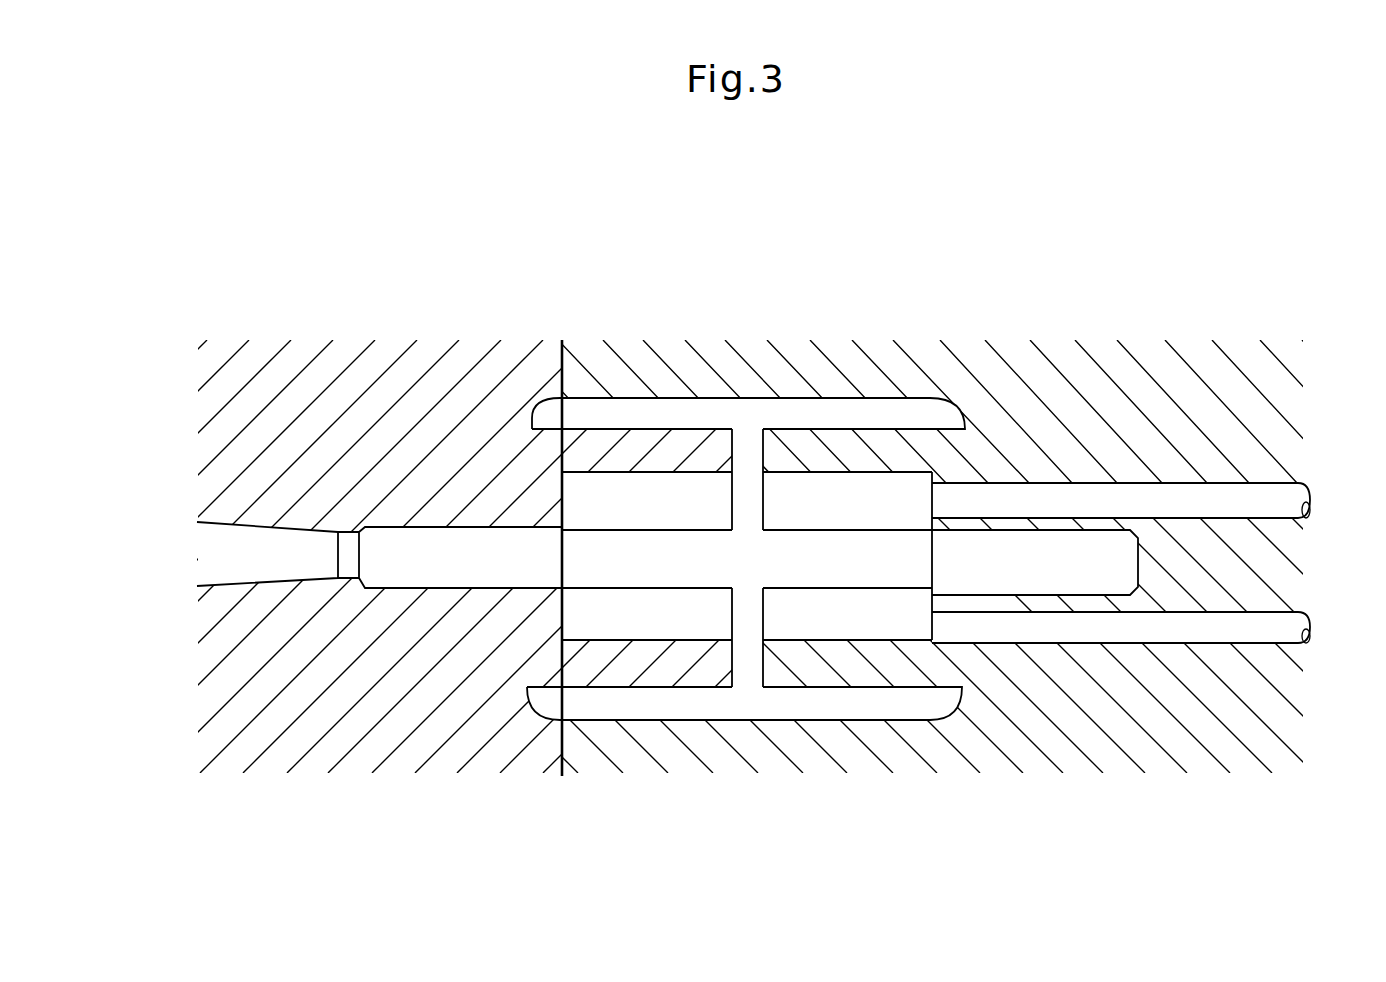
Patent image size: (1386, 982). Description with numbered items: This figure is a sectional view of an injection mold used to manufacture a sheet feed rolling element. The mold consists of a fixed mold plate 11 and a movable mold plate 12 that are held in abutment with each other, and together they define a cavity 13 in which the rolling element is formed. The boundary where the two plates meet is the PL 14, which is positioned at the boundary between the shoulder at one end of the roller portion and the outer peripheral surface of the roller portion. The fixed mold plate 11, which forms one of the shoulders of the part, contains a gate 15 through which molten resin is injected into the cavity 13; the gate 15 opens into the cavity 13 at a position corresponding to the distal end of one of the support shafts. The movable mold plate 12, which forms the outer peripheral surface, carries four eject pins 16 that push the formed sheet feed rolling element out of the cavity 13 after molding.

The fixed mold plate 11 is at (364, 373).
The movable mold plate 12 is at (1073, 385).
The cavity 13 is at (743, 413).
The PL (parting line) 14 is at (561, 743).
The gate 15 is at (223, 557).
The eject pins 16 is at (1267, 497).